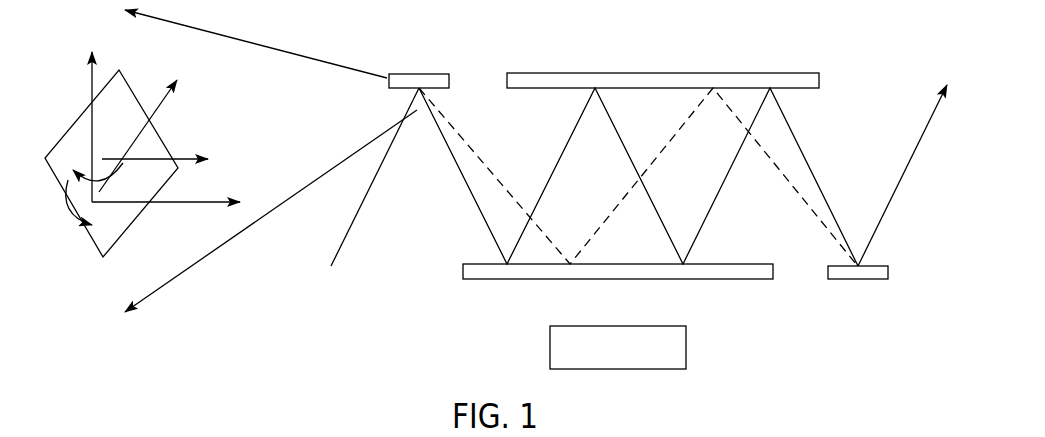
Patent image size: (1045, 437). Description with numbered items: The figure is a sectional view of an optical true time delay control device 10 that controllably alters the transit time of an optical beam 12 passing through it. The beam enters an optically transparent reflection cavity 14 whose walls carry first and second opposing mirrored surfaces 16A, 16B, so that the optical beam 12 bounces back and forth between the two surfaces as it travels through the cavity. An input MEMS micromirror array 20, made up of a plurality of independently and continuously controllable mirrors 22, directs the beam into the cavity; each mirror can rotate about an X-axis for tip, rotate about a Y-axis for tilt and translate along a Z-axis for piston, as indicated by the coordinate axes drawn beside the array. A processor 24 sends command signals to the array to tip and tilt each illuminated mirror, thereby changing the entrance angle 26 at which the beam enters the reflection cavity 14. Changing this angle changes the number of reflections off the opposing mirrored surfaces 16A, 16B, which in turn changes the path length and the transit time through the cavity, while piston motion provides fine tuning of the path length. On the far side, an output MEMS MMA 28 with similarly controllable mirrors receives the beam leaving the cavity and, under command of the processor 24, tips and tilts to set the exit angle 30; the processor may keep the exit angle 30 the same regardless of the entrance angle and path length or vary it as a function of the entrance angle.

The optical TTD control device 10 is at (853, 32).
The optical beam 12 is at (355, 218).
The optically transparent reflection cavity 14 is at (584, 186).
The first mirrored surface 16A is at (663, 73).
The second mirrored surface 16B is at (618, 279).
The input MEMS micromirror array 20 is at (421, 73).
The independently and continuously controllable mirrors 22 is at (80, 117).
The processor 24 is at (687, 347).
The entrance angle 26 is at (398, 96).
The output MEMS MMA 28 is at (858, 280).
The exit angle 30 is at (874, 259).